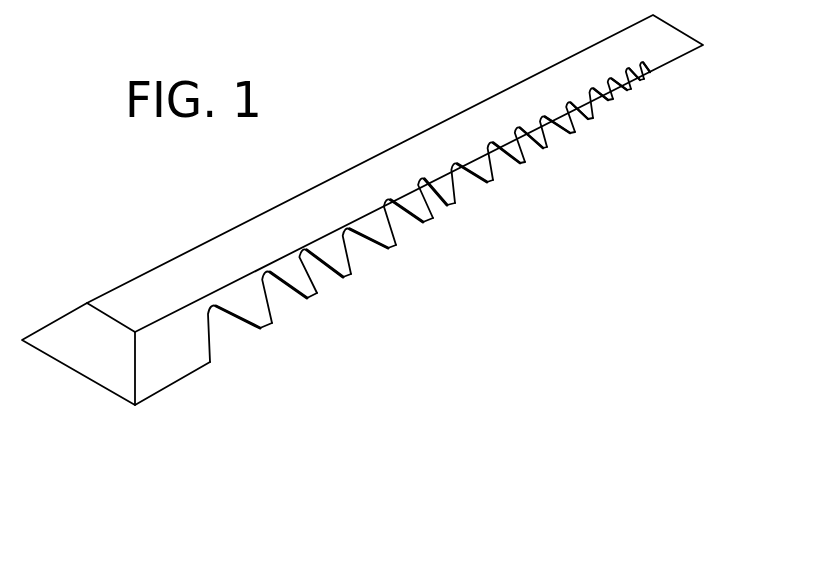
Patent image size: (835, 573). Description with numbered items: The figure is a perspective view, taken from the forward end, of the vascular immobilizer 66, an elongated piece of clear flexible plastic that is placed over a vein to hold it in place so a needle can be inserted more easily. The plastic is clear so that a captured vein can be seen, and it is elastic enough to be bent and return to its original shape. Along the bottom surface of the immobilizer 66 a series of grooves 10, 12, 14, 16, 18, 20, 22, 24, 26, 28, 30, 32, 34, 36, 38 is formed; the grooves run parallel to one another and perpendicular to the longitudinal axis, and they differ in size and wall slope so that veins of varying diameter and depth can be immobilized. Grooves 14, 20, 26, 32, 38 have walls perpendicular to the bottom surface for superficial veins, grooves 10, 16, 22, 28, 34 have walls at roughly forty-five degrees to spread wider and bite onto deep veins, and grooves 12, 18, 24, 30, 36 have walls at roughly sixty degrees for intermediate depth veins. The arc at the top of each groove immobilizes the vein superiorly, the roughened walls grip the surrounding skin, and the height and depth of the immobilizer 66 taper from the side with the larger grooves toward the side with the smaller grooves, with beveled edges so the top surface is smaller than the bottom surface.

The groove 10 is at (225, 335).
The groove 12 is at (283, 305).
The groove 14 is at (318, 288).
The groove 16 is at (357, 253).
The groove 18 is at (397, 225).
The groove 20 is at (430, 205).
The groove 22 is at (465, 182).
The groove 24 is at (502, 167).
The groove 26 is at (528, 150).
The groove 28 is at (553, 135).
The groove 30 is at (575, 122).
The groove 32 is at (598, 105).
The groove 34 is at (617, 90).
The groove 36 is at (635, 83).
The groove 38 is at (648, 75).
The vascular immobilizer 66 is at (118, 399).